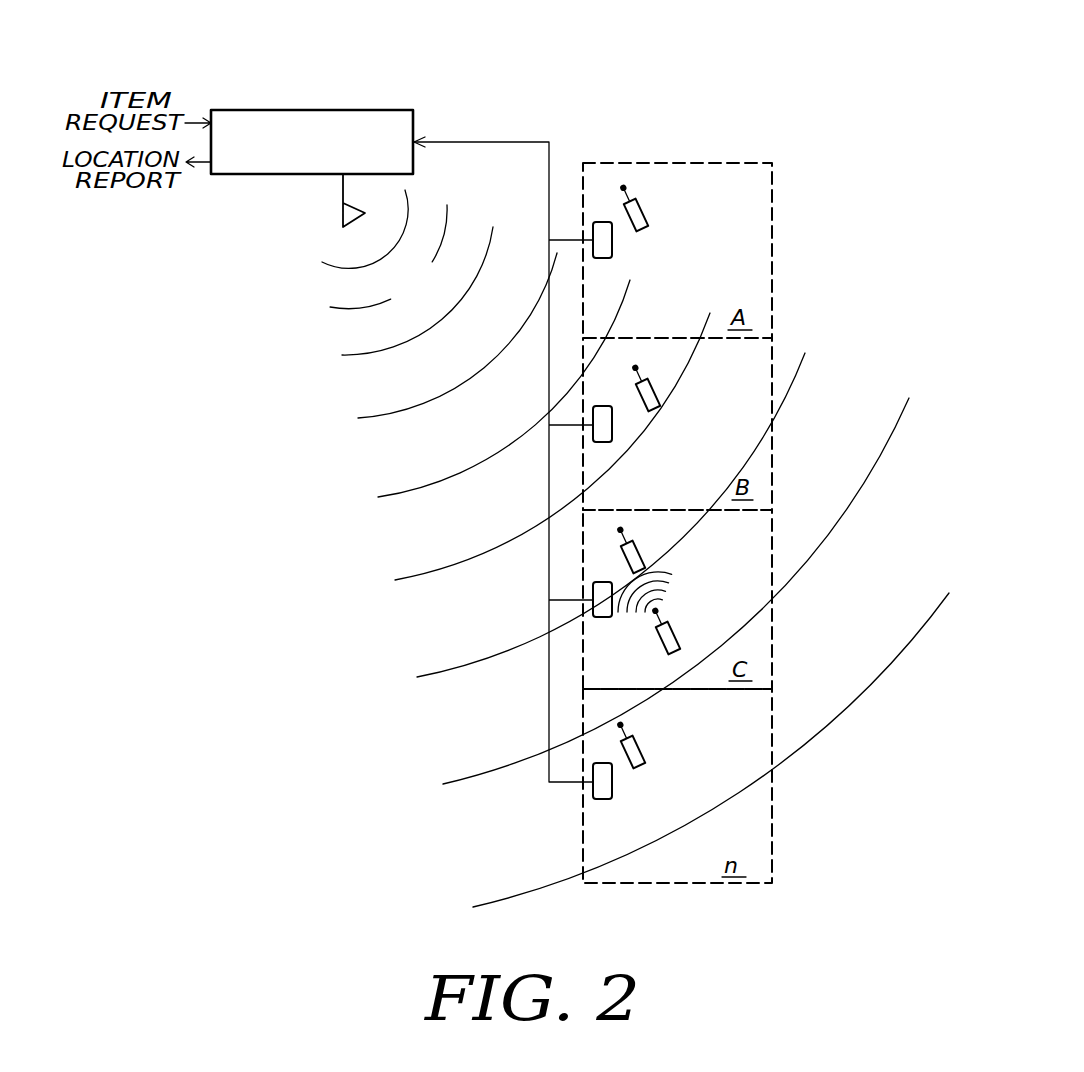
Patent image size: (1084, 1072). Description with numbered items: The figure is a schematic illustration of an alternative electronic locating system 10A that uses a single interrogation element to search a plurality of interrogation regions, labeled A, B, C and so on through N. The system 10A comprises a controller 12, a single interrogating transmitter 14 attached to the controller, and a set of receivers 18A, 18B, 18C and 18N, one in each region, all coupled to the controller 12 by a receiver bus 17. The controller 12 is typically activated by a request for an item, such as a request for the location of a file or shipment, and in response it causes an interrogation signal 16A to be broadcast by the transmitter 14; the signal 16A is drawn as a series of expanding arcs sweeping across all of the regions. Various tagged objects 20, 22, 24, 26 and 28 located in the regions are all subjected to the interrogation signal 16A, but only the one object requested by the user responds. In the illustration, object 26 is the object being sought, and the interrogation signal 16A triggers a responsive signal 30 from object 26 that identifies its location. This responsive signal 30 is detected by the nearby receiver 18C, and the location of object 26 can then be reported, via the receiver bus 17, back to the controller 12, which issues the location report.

The alternative system 10A is at (646, 81).
The controller 12 is at (320, 110).
The interrogating transmitter 14 is at (345, 226).
The interrogation signal 16A is at (427, 281).
The receiver bus 17 is at (549, 377).
The receiver 18A is at (612, 243).
The receiver 18B is at (612, 437).
The receiver 18C is at (602, 617).
The receiver 18N is at (612, 786).
The tagged object 20 is at (645, 214).
The tagged object 22 is at (657, 392).
The tagged object 24 is at (642, 556).
The tagged object 26 is at (677, 633).
The tagged object 28 is at (642, 747).
The responsive signal 30 is at (674, 590).